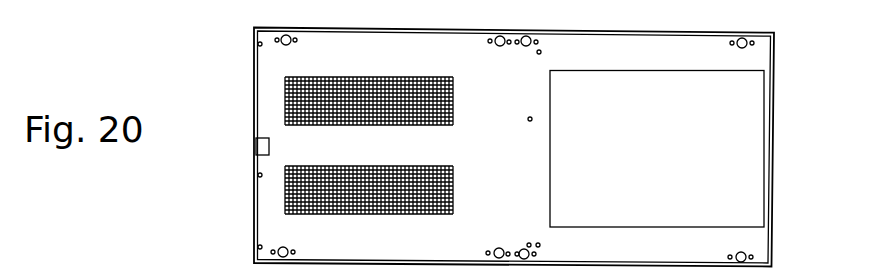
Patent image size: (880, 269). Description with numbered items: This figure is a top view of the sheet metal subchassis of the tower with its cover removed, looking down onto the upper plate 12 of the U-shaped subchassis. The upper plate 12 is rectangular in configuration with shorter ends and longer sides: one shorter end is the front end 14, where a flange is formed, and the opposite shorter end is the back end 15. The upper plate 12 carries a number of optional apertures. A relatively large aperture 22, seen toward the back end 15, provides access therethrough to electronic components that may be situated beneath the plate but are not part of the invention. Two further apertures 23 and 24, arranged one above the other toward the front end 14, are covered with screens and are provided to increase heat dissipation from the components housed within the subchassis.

The upper plate 12 is at (518, 160).
The front end 14 is at (255, 160).
The back end 15 is at (775, 157).
The aperture 22 is at (666, 160).
The aperture 23 is at (455, 97).
The aperture 24 is at (454, 207).